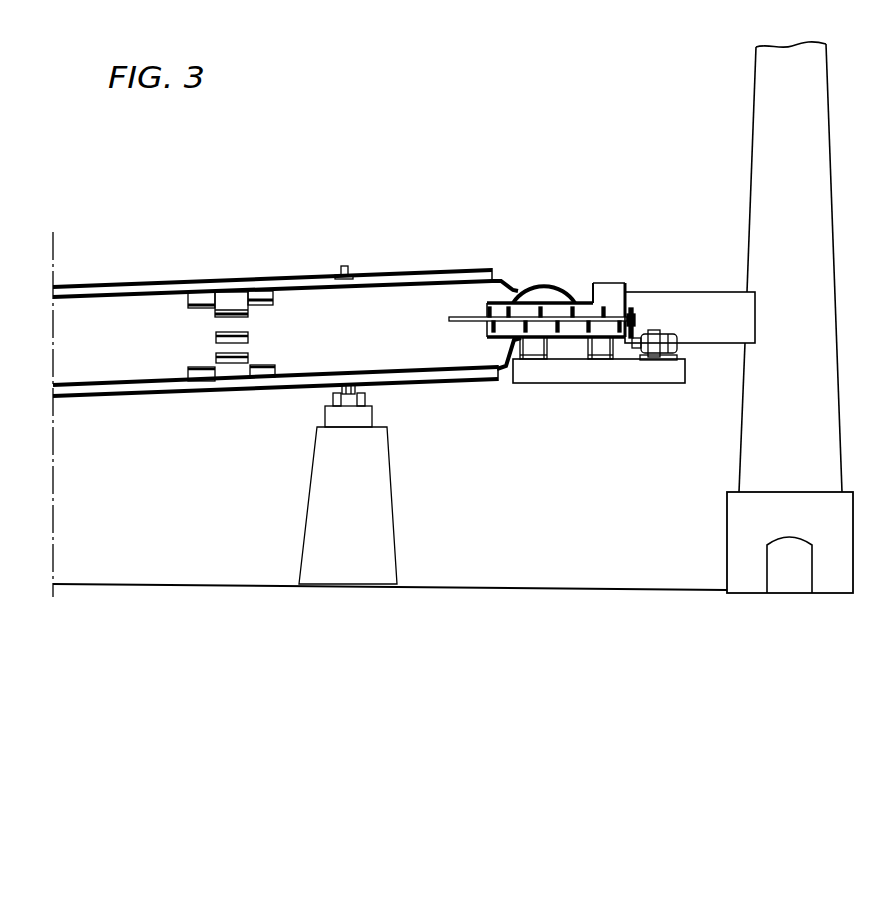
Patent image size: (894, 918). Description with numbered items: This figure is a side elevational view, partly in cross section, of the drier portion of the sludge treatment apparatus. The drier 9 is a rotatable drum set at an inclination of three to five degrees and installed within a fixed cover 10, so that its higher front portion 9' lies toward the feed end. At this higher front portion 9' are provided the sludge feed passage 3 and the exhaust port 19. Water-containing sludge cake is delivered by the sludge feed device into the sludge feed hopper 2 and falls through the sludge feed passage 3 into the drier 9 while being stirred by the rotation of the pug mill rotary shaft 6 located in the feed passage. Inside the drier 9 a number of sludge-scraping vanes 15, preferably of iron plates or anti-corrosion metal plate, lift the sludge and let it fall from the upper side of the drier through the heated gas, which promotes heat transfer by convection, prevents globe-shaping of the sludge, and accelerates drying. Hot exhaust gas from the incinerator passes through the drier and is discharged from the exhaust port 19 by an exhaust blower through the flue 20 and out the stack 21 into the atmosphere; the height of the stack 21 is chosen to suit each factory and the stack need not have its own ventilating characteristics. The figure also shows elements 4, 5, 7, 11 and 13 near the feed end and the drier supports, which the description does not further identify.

The sludge feed hopper 2 is at (613, 320).
The sludge feed passage 3 is at (577, 302).
The drive motor 4 is at (678, 344).
The coupling 5 is at (629, 329).
The pug mill rotary shaft 6 is at (626, 293).
The conveyor screw shaft 7 is at (608, 318).
The drier 9 is at (275, 315).
The higher front portion 9' is at (287, 309).
The fixed cover 10 is at (287, 314).
The support ring 11 is at (344, 265).
The support pedestal 13 is at (330, 393).
The sludge-scraping vanes 15 is at (216, 337).
The exhaust port 19 is at (533, 287).
The flue 20 is at (706, 293).
The stack 21 is at (760, 82).